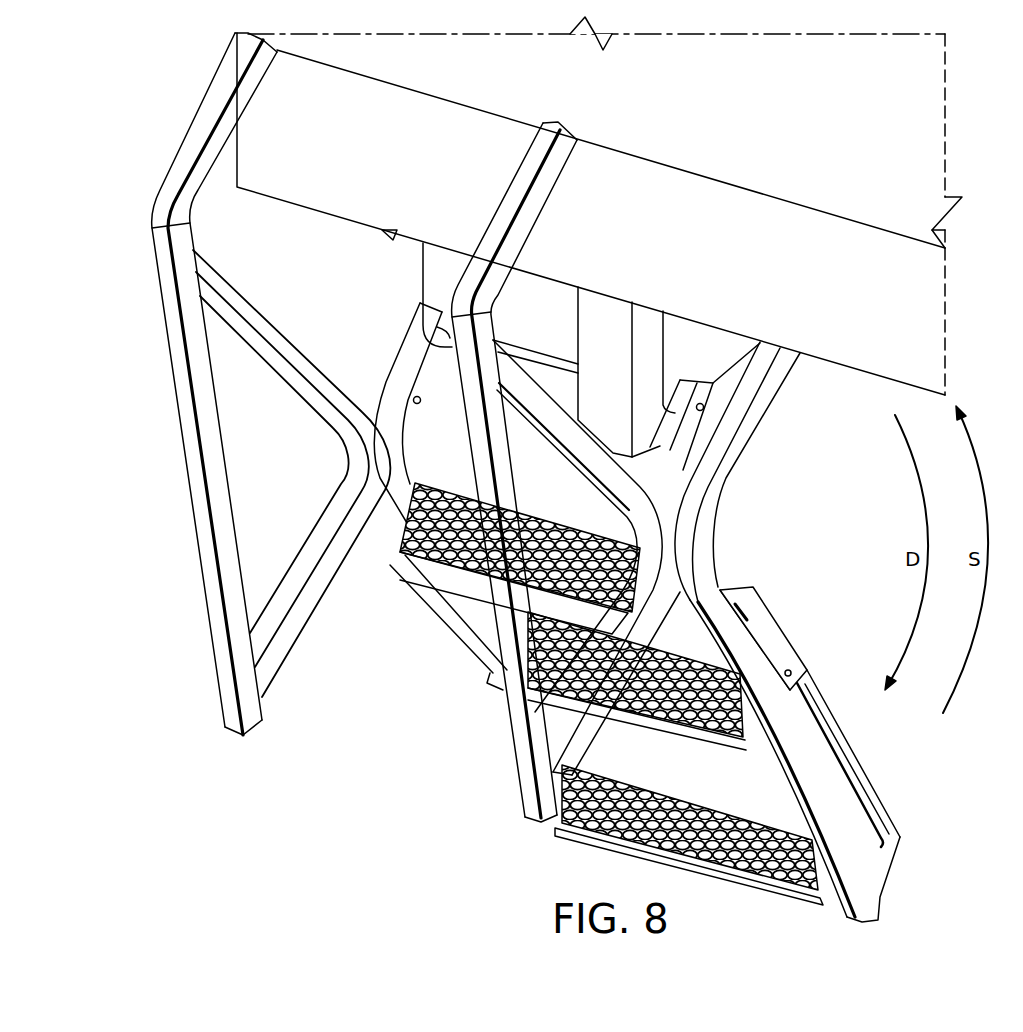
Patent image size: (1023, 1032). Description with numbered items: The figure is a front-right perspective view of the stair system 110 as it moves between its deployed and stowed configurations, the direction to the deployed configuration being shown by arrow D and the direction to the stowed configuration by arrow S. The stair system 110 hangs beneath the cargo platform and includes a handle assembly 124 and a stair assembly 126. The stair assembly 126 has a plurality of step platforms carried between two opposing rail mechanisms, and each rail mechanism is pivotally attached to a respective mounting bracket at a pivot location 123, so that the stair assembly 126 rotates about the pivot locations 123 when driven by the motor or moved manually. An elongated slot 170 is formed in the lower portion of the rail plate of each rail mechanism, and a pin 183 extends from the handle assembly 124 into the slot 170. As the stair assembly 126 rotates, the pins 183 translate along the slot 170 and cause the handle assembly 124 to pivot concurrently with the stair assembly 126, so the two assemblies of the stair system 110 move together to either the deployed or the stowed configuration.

The stair system 110 is at (690, 218).
The pivot location 123 is at (750, 410).
The handle assembly 124 is at (225, 752).
The stair assembly 126 is at (580, 860).
The elongated slot 170 is at (873, 793).
The pin 183 is at (797, 670).